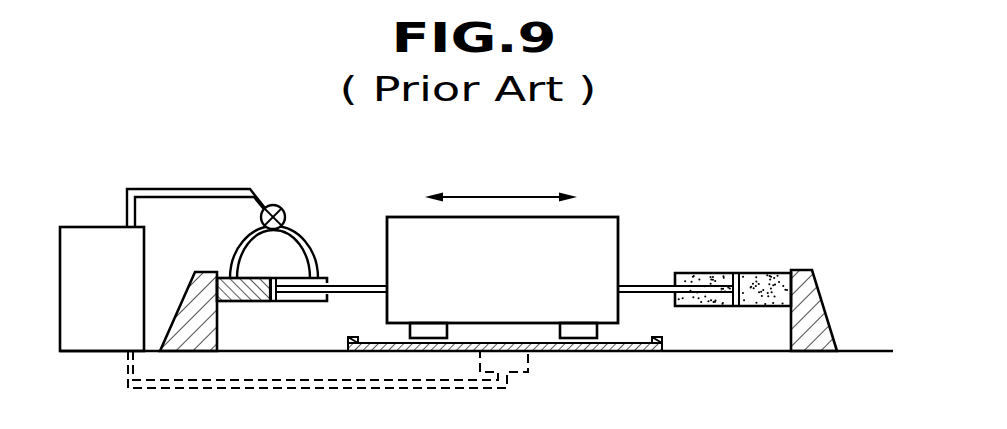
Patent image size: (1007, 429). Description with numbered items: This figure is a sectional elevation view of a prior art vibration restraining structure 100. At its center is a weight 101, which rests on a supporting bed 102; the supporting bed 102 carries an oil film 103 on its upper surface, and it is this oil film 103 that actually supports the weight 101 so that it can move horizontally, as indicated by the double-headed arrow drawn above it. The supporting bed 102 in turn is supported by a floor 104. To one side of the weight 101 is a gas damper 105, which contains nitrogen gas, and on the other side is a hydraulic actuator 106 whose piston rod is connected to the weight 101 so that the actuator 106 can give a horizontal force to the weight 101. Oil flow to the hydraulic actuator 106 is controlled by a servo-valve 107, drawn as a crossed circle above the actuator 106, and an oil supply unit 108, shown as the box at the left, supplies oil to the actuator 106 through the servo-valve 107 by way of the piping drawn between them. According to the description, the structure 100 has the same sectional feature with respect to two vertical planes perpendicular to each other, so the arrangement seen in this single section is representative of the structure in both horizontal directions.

The vibration restraining structure 100 is at (708, 177).
The weight 101 is at (600, 230).
The supporting bed 102 is at (648, 352).
The oil film 103 is at (612, 342).
The floor 104 is at (705, 351).
The gas damper 105 is at (767, 277).
The hydraulic actuator 106 is at (277, 305).
The servo-valve 107 is at (281, 205).
The oil supply unit 108 is at (88, 227).